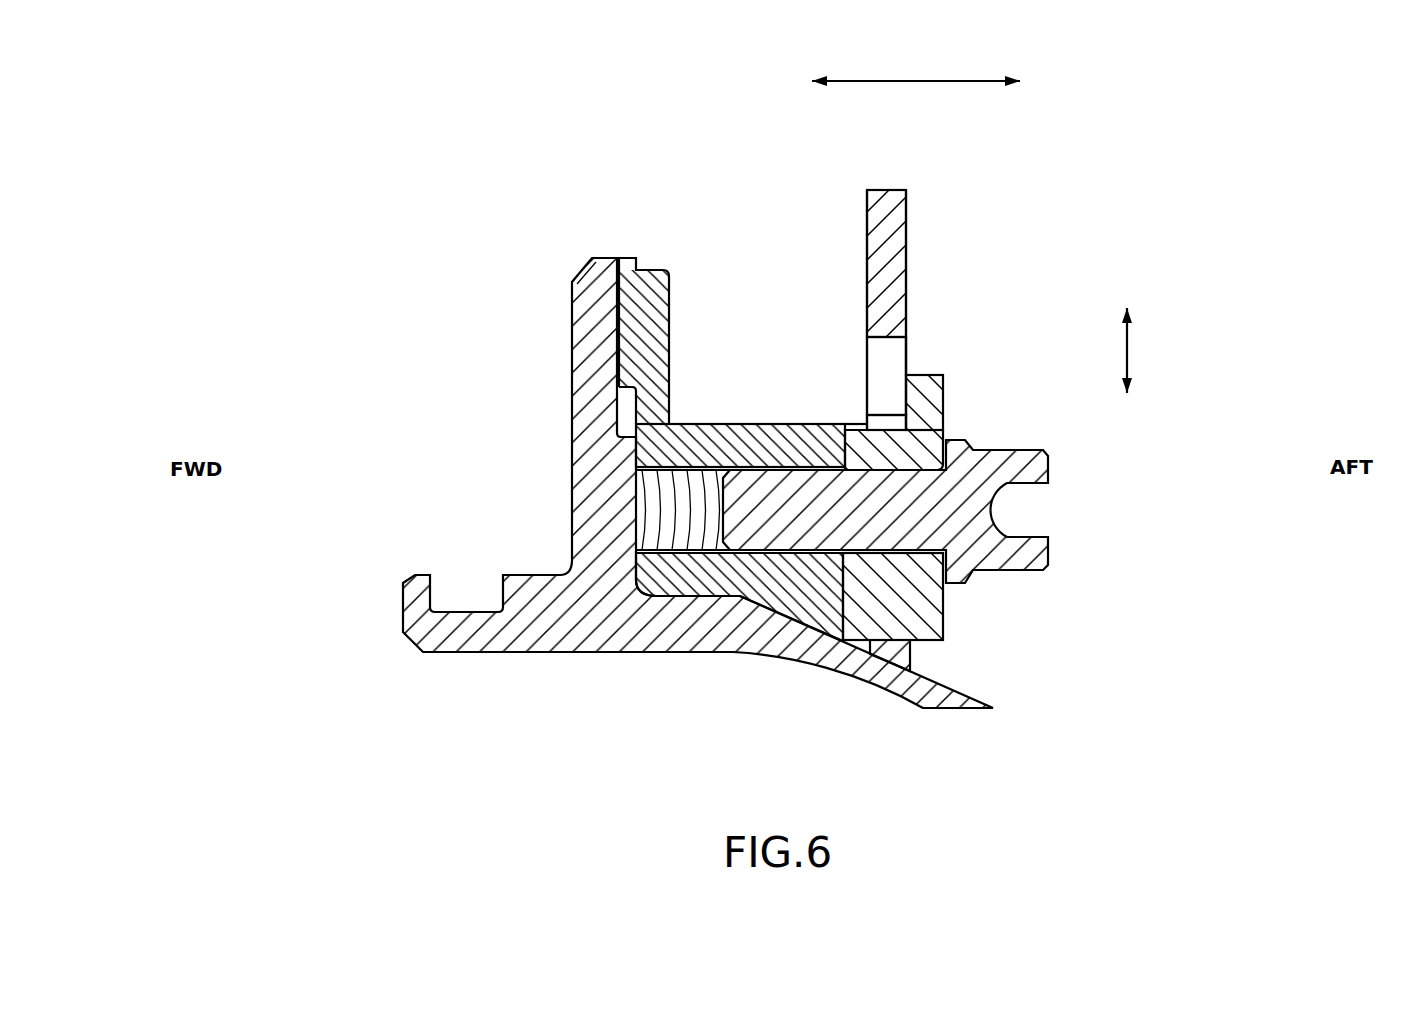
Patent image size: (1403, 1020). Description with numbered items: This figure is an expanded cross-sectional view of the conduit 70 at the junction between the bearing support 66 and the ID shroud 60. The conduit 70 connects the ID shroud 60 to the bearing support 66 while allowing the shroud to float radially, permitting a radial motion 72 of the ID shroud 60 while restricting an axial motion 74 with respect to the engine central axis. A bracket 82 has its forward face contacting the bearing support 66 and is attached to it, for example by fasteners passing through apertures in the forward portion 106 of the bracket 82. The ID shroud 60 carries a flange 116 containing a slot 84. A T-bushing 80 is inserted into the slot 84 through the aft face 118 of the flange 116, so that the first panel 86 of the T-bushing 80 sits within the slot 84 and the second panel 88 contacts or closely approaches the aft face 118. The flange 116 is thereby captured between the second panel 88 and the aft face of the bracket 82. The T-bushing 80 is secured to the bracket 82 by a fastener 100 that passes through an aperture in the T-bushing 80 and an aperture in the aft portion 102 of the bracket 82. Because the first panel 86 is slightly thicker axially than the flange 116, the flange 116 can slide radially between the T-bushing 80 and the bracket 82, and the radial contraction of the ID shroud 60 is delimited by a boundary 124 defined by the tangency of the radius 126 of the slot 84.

The ID shroud 60 is at (882, 216).
The bearing support 66 is at (583, 336).
The conduit 70 is at (755, 285).
The radial motion 72 is at (1128, 348).
The axial motion 74 is at (915, 81).
The T-bushing 80 is at (920, 603).
The bracket 82 is at (775, 607).
The slot 84 is at (872, 356).
The first panel 86 is at (853, 428).
The second panel 88 is at (945, 396).
The fastener 100 is at (987, 492).
The aft portion 102 is at (733, 437).
The forward portion 106 is at (663, 286).
The flange 116 is at (878, 251).
The aft face 118 is at (907, 258).
The boundary 124 is at (867, 425).
The radius 126 is at (907, 363).